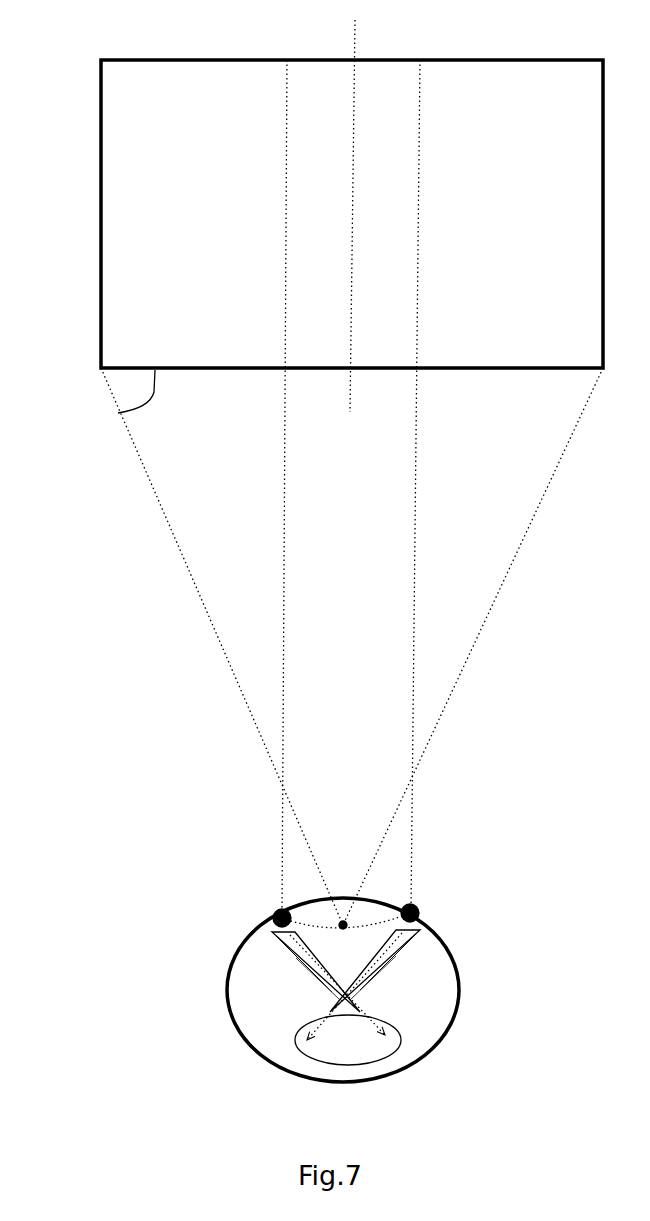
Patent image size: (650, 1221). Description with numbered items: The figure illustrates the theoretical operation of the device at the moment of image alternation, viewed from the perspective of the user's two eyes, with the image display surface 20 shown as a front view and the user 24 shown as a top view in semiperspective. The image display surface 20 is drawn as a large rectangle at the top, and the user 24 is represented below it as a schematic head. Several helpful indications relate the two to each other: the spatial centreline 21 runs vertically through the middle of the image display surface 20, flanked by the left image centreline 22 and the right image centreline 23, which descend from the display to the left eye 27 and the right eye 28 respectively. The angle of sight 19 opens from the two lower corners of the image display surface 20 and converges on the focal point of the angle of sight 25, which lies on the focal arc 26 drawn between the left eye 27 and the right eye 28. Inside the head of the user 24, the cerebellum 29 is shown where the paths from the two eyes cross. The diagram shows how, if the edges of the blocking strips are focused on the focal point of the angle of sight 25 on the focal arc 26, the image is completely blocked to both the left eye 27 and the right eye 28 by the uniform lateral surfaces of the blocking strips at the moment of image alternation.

The angle of sight 19 is at (130, 390).
The image display surface 20 is at (97, 210).
The spatial centreline 21 is at (359, 41).
The left image centreline 22 is at (283, 205).
The right image centreline 23 is at (421, 235).
The user 24 is at (228, 1000).
The focal point of the angle of sight 25 is at (334, 928).
The focal arc 26 is at (388, 926).
The left eye 27 is at (270, 915).
The right eye 28 is at (424, 912).
The cerebellum 29 is at (345, 1040).